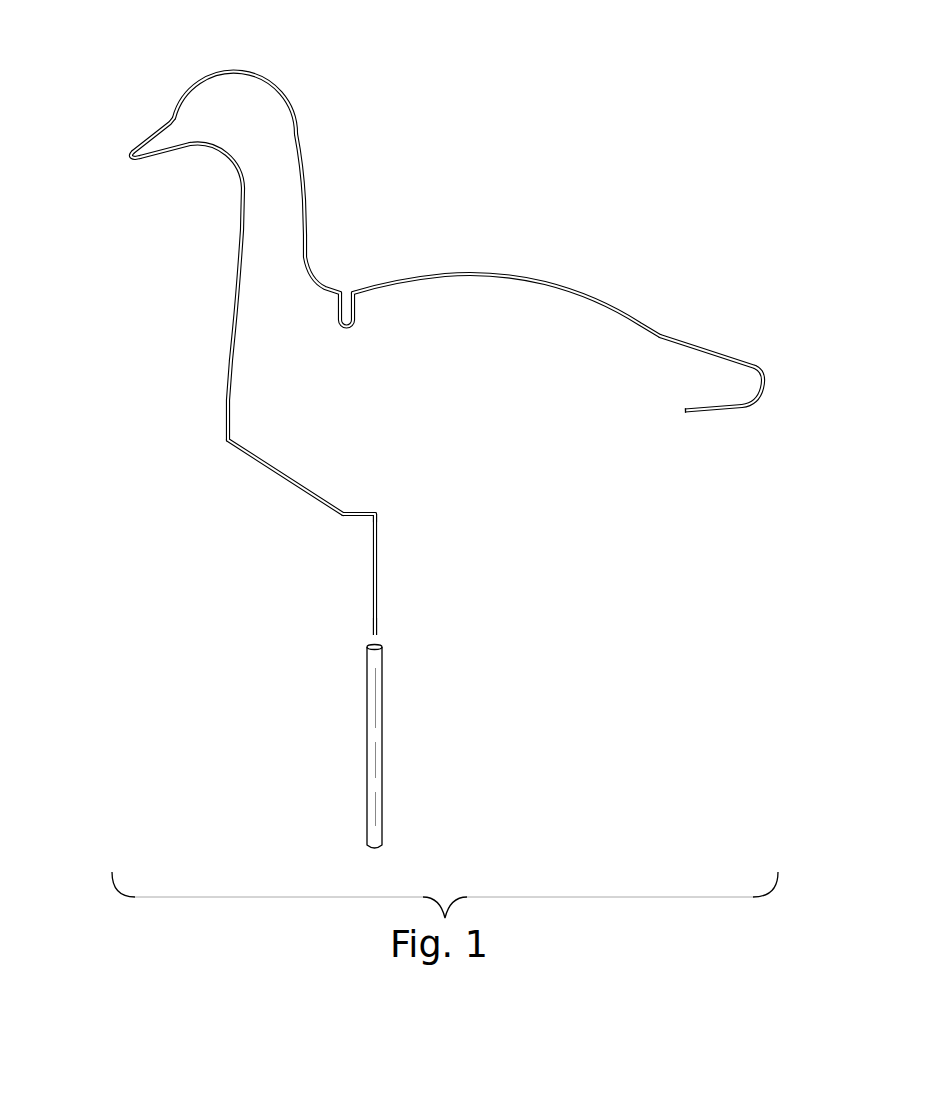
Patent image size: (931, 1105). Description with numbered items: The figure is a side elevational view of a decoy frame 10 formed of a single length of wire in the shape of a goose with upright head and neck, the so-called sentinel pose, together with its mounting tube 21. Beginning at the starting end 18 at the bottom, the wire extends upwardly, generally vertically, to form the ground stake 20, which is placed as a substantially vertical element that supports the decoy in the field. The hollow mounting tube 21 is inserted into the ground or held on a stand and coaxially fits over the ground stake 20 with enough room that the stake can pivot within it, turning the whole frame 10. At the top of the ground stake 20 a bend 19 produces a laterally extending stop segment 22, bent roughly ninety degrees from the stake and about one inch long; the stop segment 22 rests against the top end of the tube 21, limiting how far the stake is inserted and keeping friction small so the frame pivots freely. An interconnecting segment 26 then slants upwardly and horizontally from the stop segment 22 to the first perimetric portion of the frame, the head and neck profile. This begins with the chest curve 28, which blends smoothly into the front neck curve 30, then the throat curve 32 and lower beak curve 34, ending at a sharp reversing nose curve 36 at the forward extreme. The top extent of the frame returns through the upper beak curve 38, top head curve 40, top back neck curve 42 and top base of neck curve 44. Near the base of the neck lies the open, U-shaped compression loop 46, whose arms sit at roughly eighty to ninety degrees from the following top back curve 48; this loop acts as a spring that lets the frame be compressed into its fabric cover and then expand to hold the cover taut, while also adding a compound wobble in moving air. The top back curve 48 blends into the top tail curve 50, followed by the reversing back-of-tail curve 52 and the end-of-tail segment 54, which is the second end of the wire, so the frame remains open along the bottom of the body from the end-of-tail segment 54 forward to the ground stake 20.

The decoy frame 10 is at (431, 428).
The starting end 18 is at (378, 635).
The bend 19 is at (377, 511).
The ground stake 20 is at (378, 555).
The mounting tube 21 is at (383, 742).
The stop segment 22 is at (358, 512).
The interconnecting segment 26 is at (287, 480).
The chest curve 28 is at (232, 388).
The front neck curve 30 is at (236, 303).
The throat curve 32 is at (227, 164).
The lower beak curve 34 is at (148, 161).
The nose curve 36 is at (126, 153).
The upper beak curve 38 is at (150, 130).
The top head curve 40 is at (216, 74).
The top back neck curve 42 is at (304, 153).
The top base of neck curve 44 is at (314, 277).
The compression loop 46 is at (358, 323).
The top back curve 48 is at (490, 272).
The top tail curve 50 is at (727, 351).
The back-of-tail curve 52 is at (761, 392).
The end-of-tail segment 54 is at (700, 413).